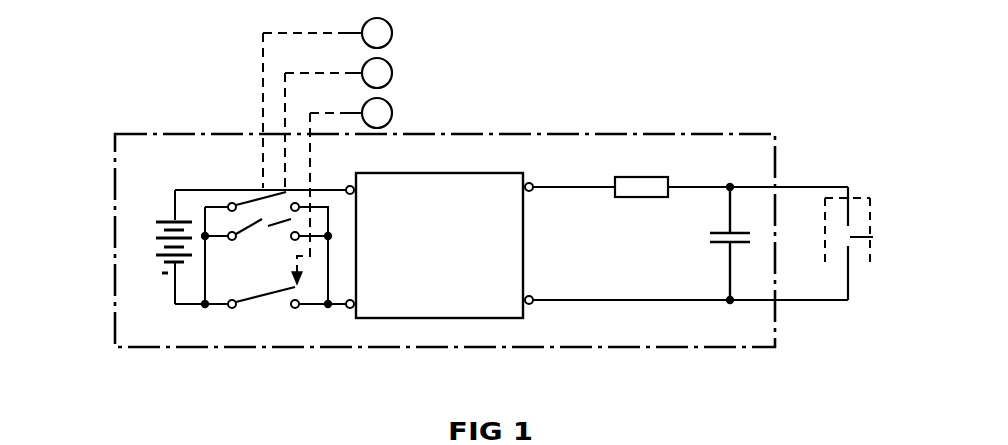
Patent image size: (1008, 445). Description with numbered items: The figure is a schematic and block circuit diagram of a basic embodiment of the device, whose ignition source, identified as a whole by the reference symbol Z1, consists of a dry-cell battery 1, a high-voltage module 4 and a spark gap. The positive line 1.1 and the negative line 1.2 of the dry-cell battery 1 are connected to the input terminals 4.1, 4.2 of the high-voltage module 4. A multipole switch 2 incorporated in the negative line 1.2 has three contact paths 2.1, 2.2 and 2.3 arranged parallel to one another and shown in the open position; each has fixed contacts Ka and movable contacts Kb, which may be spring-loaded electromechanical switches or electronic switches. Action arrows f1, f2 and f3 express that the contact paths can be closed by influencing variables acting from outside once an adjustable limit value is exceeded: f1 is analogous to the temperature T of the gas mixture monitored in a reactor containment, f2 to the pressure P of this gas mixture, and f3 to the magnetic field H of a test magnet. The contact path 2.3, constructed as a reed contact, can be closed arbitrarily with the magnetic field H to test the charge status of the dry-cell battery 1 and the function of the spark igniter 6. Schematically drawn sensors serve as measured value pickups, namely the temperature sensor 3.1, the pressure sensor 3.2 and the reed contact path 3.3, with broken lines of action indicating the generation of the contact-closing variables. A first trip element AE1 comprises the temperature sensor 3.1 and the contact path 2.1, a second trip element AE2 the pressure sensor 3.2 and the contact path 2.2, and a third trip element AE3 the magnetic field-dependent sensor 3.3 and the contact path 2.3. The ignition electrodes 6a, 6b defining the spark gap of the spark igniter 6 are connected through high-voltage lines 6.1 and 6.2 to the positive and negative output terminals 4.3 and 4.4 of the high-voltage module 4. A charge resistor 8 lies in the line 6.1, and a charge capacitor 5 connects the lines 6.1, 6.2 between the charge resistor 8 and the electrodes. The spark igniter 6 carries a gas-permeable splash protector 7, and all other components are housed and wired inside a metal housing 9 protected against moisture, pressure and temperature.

The dry-cell battery 1 is at (160, 212).
The positive line 1.1 is at (195, 184).
The negative line 1.2 is at (180, 308).
The multipole switch 2 is at (247, 311).
The contact path 2.1 is at (255, 296).
The contact path 2.2 is at (247, 238).
The contact path 2.3 is at (251, 187).
The temperature sensor 3.1 is at (392, 113).
The pressure sensor 3.2 is at (392, 73).
The reed contact path 3.3 is at (392, 33).
The high-voltage module 4 is at (439, 245).
The input terminal 4.1 is at (368, 198).
The input terminal 4.2 is at (369, 301).
The positive output terminal 4.3 is at (510, 197).
The negative output terminal 4.4 is at (510, 301).
The charge capacitor 5 is at (727, 232).
The spark igniter 6 is at (873, 237).
The ignition electrode 6a is at (856, 218).
The ignition electrode 6b is at (856, 253).
The high-voltage line 6.1 is at (556, 185).
The high-voltage line 6.2 is at (556, 298).
The gas-permeable splash protector 7 is at (860, 196).
The charge resistor 8 is at (634, 176).
The metal housing 9 is at (494, 134).
The ignition source Z1 is at (710, 118).
The first trip element AE1 is at (158, 288).
The second trip element AE2 is at (145, 245).
The third trip element AE3 is at (160, 203).
The fixed contacts Ka is at (297, 313).
The movable contacts Kb is at (272, 301).
The influencing variable f1 is at (295, 278).
The influencing variable f2 is at (268, 210).
The influencing variable f3 is at (260, 180).
The magnetic field H is at (338, 20).
The pressure P is at (338, 60).
The temperature T is at (338, 100).